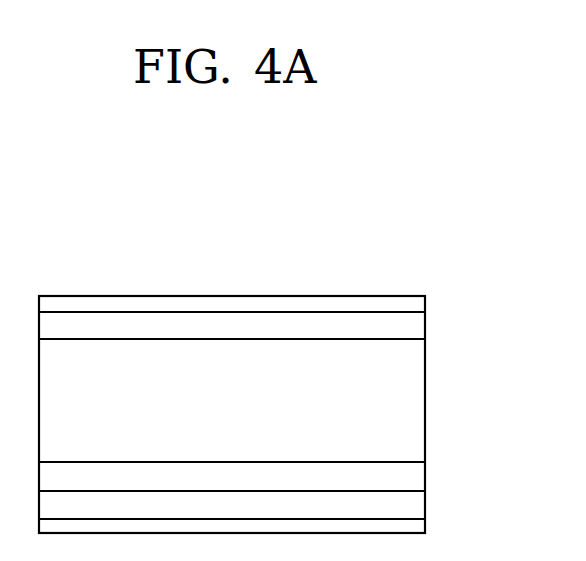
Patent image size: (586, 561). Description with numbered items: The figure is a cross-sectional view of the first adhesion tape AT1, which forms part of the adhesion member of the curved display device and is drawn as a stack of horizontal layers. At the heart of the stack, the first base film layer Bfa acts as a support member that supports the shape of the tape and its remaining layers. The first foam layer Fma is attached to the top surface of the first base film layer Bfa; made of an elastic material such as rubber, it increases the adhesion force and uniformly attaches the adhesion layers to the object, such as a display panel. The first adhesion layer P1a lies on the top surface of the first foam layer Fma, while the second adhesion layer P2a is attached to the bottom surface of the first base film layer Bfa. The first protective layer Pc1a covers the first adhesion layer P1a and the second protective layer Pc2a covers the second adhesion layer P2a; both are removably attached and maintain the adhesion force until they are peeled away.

The first adhesion tape AT1 is at (381, 252).
The first protective layer Pc1a is at (418, 300).
The first adhesion layer P1a is at (418, 325).
The first foam layer Fma is at (418, 398).
The first base film layer Bfa is at (418, 474).
The second adhesion layer P2a is at (418, 501).
The second protective layer Pc2a is at (418, 524).